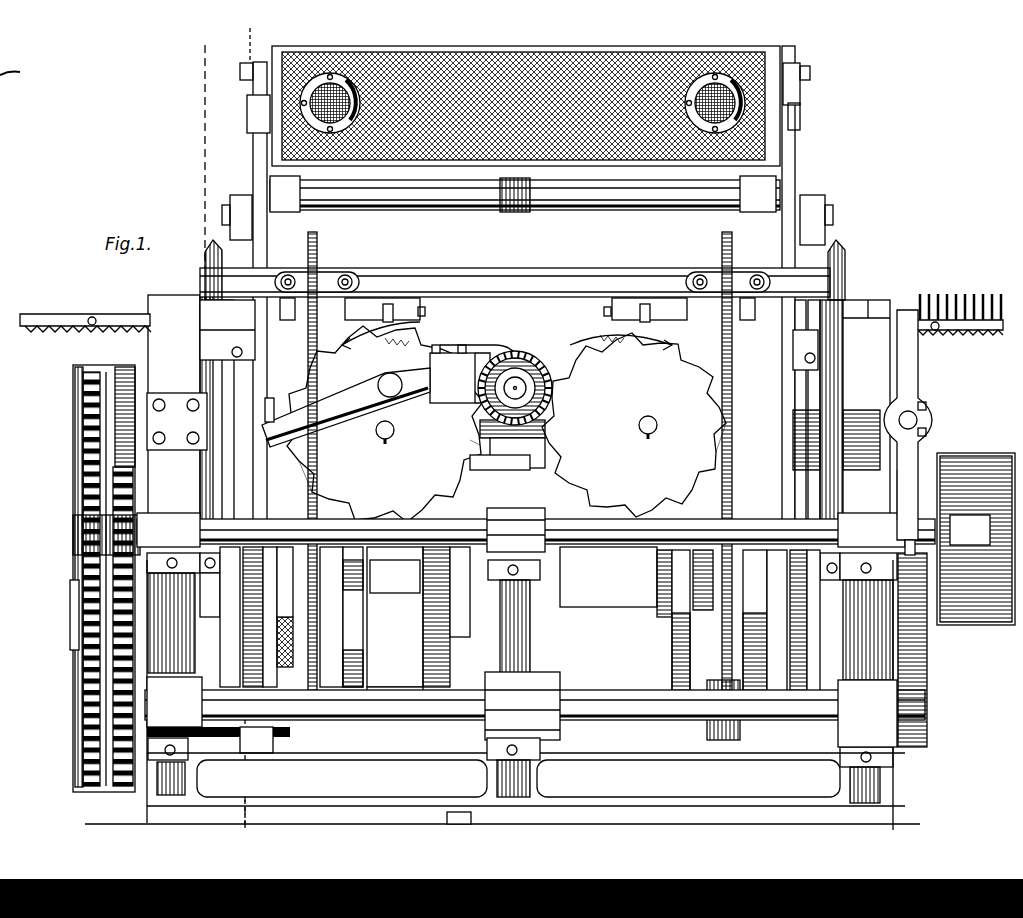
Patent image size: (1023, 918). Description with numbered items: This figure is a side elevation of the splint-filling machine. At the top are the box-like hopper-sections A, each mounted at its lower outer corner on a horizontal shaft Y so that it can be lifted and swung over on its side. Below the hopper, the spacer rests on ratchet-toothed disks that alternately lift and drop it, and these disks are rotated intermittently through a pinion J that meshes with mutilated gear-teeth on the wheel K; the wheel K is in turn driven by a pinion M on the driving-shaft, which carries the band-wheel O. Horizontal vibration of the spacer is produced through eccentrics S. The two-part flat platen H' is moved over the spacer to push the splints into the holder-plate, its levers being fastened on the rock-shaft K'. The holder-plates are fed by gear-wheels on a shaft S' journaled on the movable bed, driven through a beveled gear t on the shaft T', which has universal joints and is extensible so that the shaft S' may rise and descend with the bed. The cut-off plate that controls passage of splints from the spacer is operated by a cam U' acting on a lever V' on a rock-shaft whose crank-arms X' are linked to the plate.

The hopper-section A is at (526, 106).
The horizontal shaft Y is at (565, 195).
The wheel K is at (90, 578).
The pinion M is at (88, 531).
The pinion J is at (64, 624).
The two-part flat platen H' is at (515, 266).
The eccentric S is at (496, 402).
The shaft S' is at (532, 388).
The beveled gear t is at (478, 424).
The shaft T' is at (346, 404).
The rock-shaft K' is at (395, 675).
The crank-arm X' is at (930, 400).
The lever V' is at (892, 495).
The cam U' is at (926, 670).
The band-wheel O is at (976, 539).